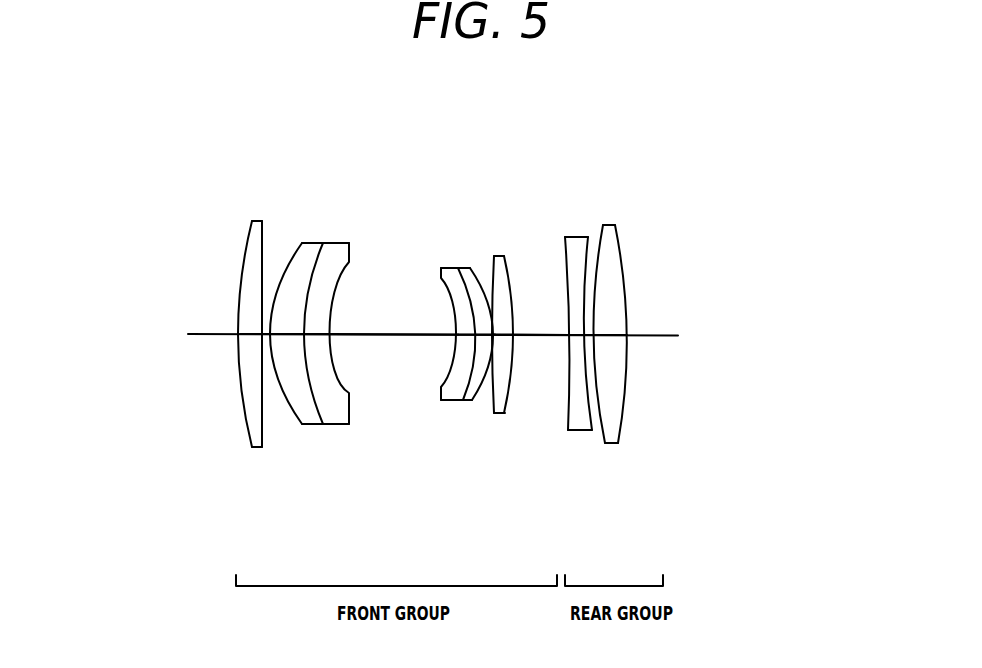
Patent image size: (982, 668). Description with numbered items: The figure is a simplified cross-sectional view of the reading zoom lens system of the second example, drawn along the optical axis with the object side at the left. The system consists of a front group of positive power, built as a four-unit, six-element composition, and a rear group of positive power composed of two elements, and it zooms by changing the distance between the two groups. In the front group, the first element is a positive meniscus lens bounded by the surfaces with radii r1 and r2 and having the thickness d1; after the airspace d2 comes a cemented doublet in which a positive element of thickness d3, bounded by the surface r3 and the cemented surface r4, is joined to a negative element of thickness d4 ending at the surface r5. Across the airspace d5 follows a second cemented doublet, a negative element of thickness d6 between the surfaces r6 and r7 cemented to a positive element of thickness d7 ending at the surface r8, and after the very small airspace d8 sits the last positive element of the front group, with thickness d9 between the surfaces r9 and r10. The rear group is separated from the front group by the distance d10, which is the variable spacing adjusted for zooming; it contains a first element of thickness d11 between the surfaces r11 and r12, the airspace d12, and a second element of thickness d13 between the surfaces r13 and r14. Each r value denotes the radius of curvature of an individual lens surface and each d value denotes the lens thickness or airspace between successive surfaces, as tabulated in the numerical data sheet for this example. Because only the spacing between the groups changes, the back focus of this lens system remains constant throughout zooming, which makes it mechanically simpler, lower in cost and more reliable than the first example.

The first lens surface radius of curvature r1 is at (252, 221).
The second lens surface radius of curvature r2 is at (262, 221).
The third lens surface radius of curvature r3 is at (302, 243).
The fourth lens surface radius of curvature r4 is at (323, 243).
The fifth lens surface radius of curvature r5 is at (349, 243).
The sixth lens surface radius of curvature r6 is at (441, 268).
The seventh lens surface radius of curvature r7 is at (458, 268).
The eighth lens surface radius of curvature r8 is at (470, 268).
The ninth lens surface radius of curvature r9 is at (494, 256).
The tenth lens surface radius of curvature r10 is at (504, 256).
The eleventh lens surface radius of curvature r11 is at (565, 237).
The twelfth lens surface radius of curvature r12 is at (588, 237).
The thirteenth lens surface radius of curvature r13 is at (603, 225).
The fourteenth lens surface radius of curvature r14 is at (615, 225).
The first lens thickness d1 is at (247, 334).
The first airspace d2 is at (268, 334).
The second lens thickness d3 is at (285, 334).
The third lens thickness d4 is at (310, 334).
The second airspace d5 is at (387, 334).
The fourth lens thickness d6 is at (468, 334).
The fifth lens thickness d7 is at (483, 334).
The third airspace d8 is at (498, 334).
The sixth lens thickness d9 is at (540, 334).
The variable airspace between front and rear groups d10 is at (575, 335).
The seventh lens thickness d11 is at (596, 335).
The fourth airspace d12 is at (604, 335).
The eighth lens thickness d13 is at (614, 335).